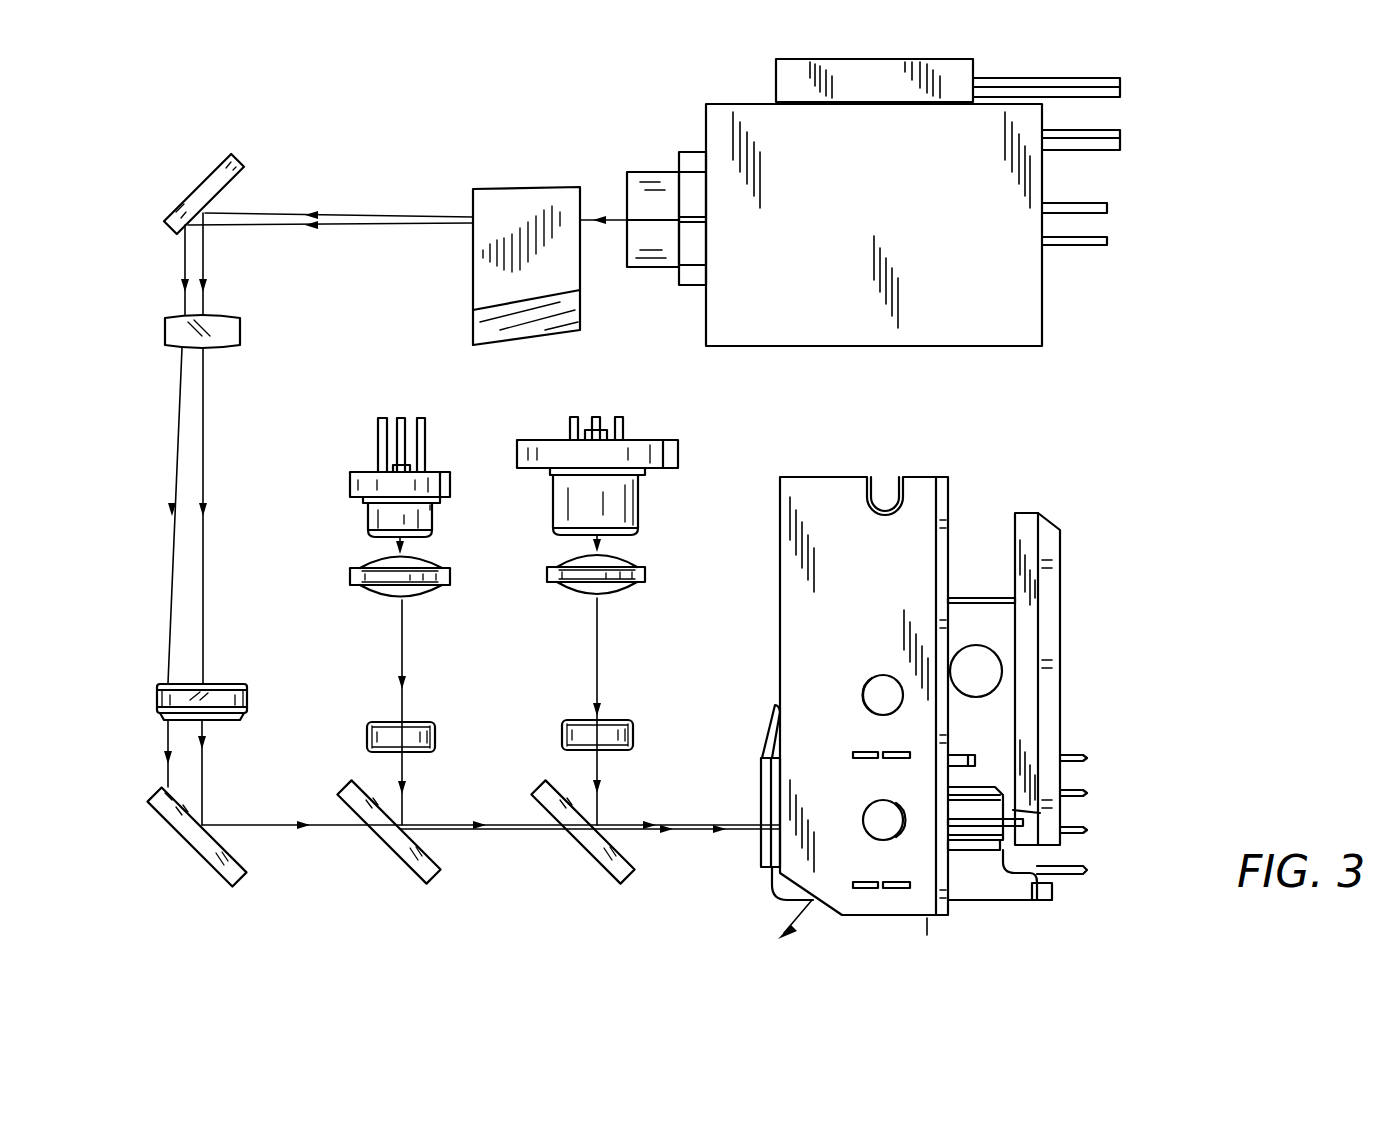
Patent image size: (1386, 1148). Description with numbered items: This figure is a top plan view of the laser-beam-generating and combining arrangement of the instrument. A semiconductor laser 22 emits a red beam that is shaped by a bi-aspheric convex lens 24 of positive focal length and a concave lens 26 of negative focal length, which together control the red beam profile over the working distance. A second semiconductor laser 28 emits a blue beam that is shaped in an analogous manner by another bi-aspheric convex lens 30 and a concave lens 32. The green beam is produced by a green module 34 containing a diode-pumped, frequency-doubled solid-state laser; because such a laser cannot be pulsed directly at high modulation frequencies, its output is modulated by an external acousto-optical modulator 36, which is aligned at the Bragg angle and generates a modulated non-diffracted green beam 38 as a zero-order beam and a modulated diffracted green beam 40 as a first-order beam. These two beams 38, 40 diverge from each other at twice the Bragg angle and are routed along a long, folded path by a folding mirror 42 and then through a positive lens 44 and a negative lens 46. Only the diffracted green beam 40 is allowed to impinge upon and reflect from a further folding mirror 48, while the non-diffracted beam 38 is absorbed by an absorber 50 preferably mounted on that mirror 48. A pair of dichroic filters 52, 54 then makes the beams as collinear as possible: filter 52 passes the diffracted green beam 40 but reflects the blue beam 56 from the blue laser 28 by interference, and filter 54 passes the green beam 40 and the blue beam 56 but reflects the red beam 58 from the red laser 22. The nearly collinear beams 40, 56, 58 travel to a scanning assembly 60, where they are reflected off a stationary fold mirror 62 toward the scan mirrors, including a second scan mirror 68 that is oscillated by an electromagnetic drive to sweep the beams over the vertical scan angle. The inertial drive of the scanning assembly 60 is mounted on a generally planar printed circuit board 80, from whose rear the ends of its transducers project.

The semiconductor laser 22 is at (632, 507).
The bi-aspheric convex lens 24 is at (645, 575).
The concave lens 26 is at (633, 733).
The semiconductor laser 28 is at (432, 517).
The bi-aspheric convex lens 30 is at (450, 573).
The concave lens 32 is at (437, 731).
The green module 34 is at (762, 347).
The acousto-optical modulator 36 is at (513, 347).
The modulated non-diffracted green beam 38 is at (252, 225).
The modulated diffracted green beam 40 is at (270, 213).
The folding mirror 42 is at (217, 160).
The positive lens 44 is at (242, 333).
The negative lens 46 is at (248, 695).
The folding mirror 48 is at (237, 860).
The absorber 50 is at (162, 812).
The dichroic filter 52 is at (433, 860).
The dichroic filter 54 is at (630, 857).
The blue beam 56 is at (402, 778).
The red beam 58 is at (598, 770).
The scanning assembly 60 is at (993, 500).
The stationary fold mirror 62 is at (1057, 580).
The second scan mirror 68 is at (983, 830).
The printed circuit board 80 is at (815, 495).